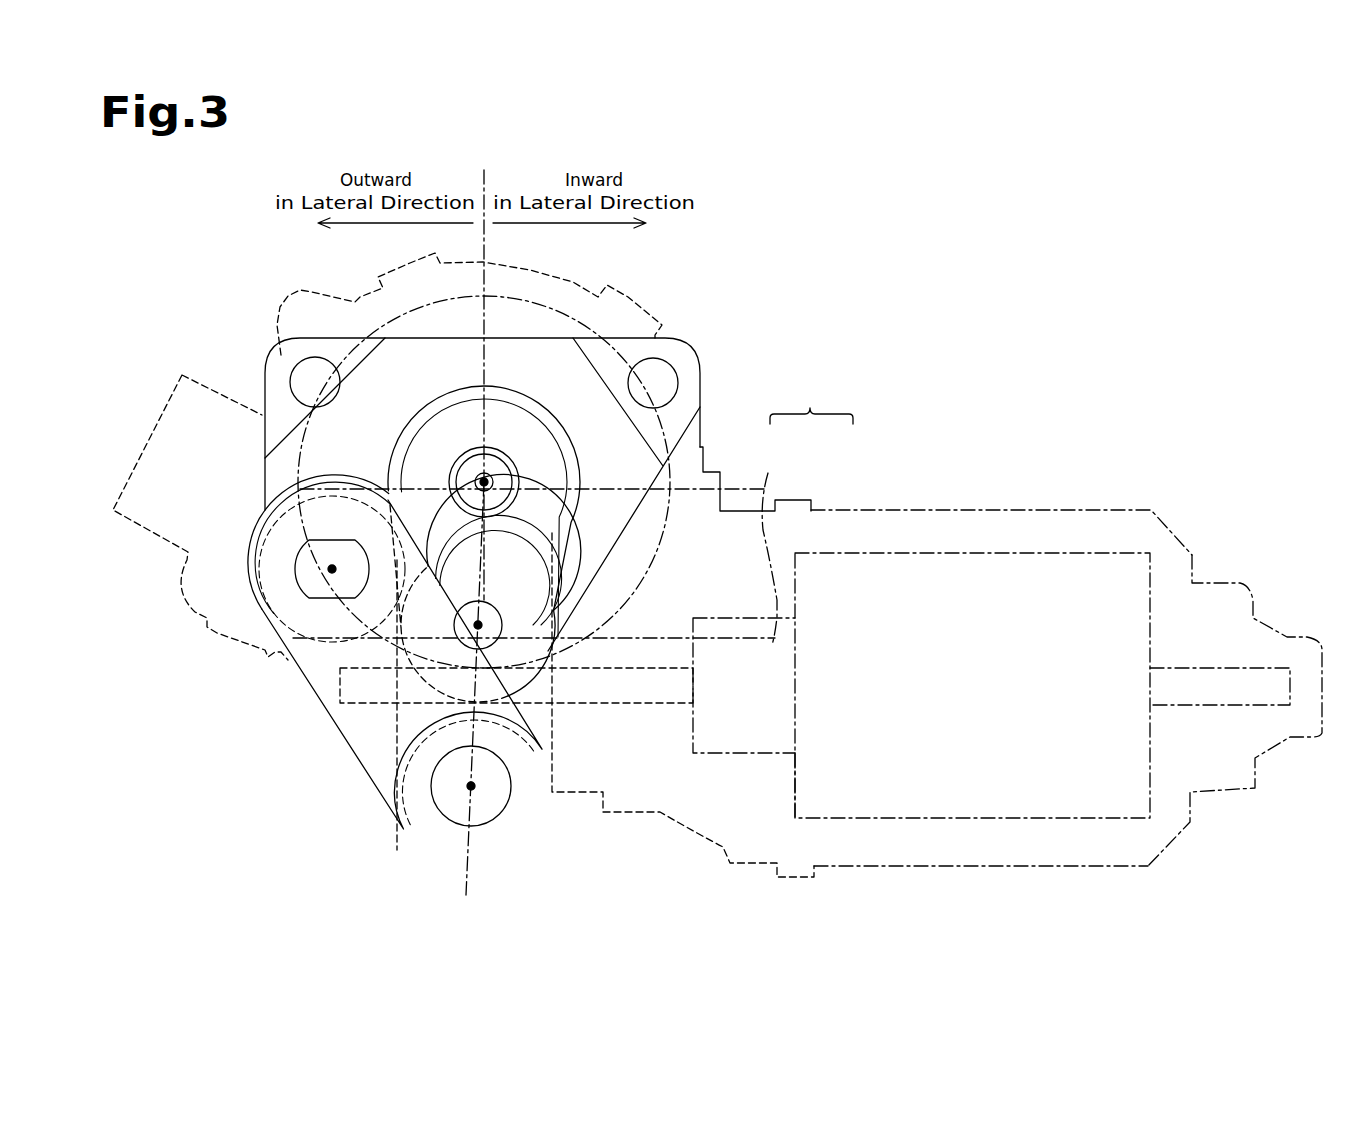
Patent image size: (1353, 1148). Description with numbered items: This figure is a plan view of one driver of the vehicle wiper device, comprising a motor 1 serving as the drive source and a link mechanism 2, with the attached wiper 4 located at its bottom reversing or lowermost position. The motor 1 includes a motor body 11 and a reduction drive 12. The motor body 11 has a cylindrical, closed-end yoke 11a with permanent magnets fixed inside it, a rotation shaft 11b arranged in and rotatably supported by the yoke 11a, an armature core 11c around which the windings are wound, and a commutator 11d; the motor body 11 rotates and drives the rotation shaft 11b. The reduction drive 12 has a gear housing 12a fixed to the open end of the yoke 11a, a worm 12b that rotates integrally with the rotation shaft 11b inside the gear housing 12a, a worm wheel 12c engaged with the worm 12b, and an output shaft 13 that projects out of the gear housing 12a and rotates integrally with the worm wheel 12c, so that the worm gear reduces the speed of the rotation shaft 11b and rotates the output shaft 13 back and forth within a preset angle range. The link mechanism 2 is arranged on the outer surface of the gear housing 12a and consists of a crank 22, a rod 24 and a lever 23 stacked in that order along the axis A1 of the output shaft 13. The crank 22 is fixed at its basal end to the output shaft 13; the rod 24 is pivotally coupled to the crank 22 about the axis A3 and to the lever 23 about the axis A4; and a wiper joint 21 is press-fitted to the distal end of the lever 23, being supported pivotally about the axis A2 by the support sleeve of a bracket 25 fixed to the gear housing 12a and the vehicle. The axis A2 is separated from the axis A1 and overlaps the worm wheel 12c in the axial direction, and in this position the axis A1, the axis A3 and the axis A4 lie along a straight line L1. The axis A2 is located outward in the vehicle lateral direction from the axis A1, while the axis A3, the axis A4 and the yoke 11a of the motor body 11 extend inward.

The motor 1 is at (811, 401).
The link mechanism 2 is at (328, 736).
The wiper 4 is at (725, 637).
The motor body 11 is at (857, 496).
The yoke 11a is at (1007, 511).
The rotation shaft 11b is at (1179, 707).
The armature core 11c is at (915, 818).
The commutator 11d is at (720, 755).
The reduction drive 12 is at (718, 453).
The gear housing 12a is at (530, 265).
The worm 12b is at (580, 707).
The worm wheel 12c is at (660, 540).
The output shaft 13 is at (497, 493).
The wiper joint 21 is at (333, 600).
The crank 22 is at (555, 573).
The lever 23 is at (375, 765).
The rod 24 is at (543, 688).
The bracket 25 is at (417, 342).
The first axis A1 is at (488, 480).
The second axis A2 is at (332, 569).
The third axis A3 is at (477, 624).
The fourth axis A4 is at (471, 786).
The straight line L1 is at (486, 440).